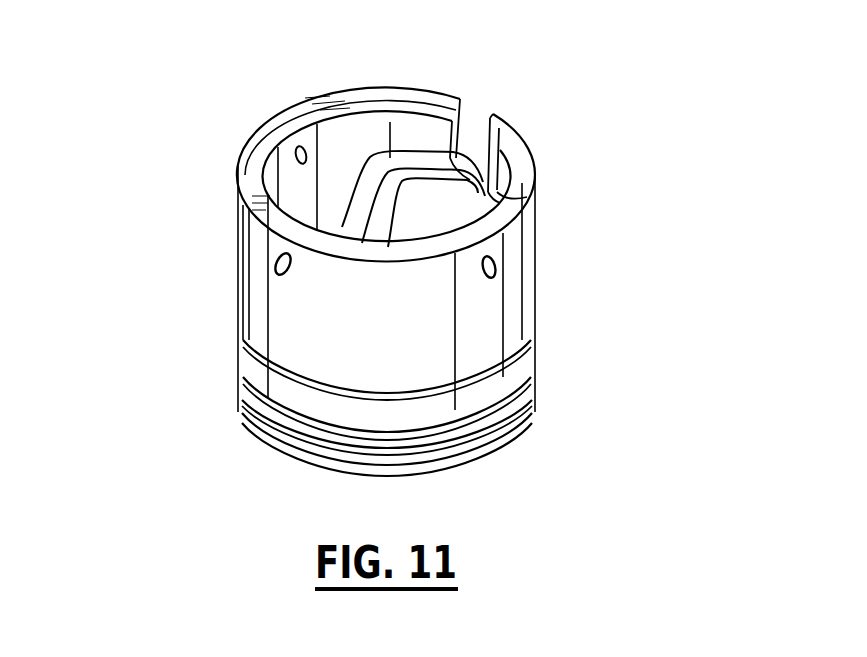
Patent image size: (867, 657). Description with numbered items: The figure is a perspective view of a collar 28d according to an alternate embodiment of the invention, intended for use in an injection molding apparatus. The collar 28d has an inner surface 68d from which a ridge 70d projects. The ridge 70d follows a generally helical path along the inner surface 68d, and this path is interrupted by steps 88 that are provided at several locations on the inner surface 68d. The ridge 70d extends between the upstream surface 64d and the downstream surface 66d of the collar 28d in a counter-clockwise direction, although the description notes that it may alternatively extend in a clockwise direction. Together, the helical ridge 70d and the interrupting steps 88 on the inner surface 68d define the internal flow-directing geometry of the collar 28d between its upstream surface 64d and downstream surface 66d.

The collar 28d is at (562, 226).
The upstream surface 64d is at (390, 96).
The downstream surface 66d is at (510, 440).
The inner surface 68d is at (475, 108).
The ridge 70d is at (390, 157).
The steps 88 is at (360, 212).